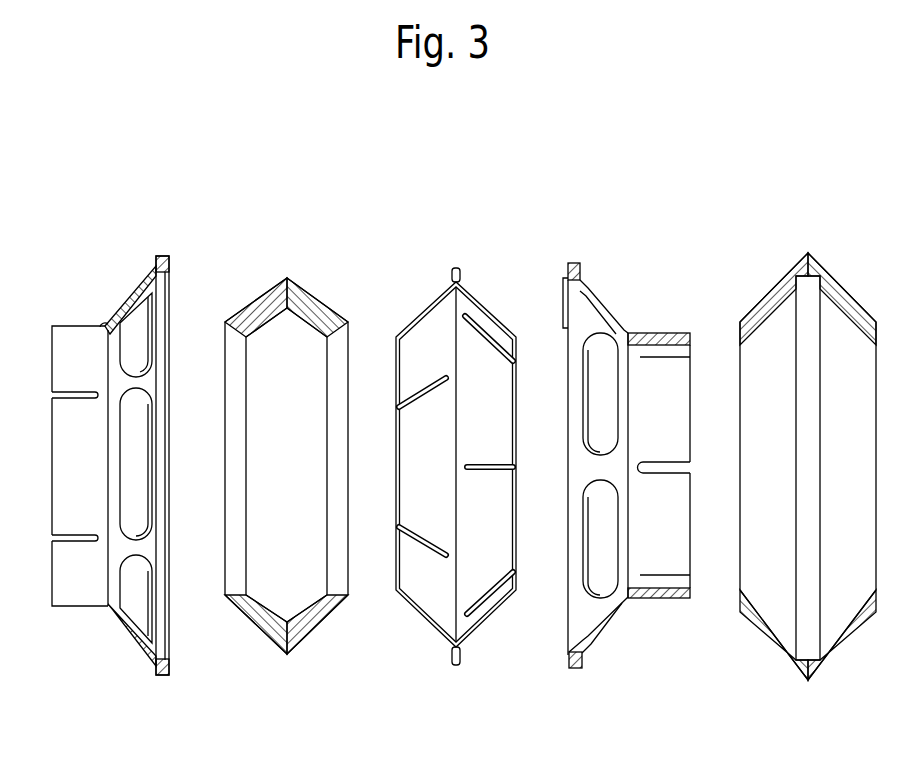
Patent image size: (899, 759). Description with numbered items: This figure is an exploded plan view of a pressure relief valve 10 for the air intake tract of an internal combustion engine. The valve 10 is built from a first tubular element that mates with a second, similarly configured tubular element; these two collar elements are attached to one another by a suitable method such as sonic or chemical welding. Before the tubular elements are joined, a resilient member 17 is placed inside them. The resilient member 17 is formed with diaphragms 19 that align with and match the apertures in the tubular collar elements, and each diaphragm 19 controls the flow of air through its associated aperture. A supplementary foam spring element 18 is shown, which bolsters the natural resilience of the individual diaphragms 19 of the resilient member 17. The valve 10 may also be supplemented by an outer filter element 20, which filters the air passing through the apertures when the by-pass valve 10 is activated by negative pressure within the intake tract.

The valve 10 is at (404, 183).
The resilient member 17 is at (455, 266).
The foam spring element 18 is at (286, 272).
The diaphragm 19 is at (497, 418).
The outer filter element 20 is at (808, 248).